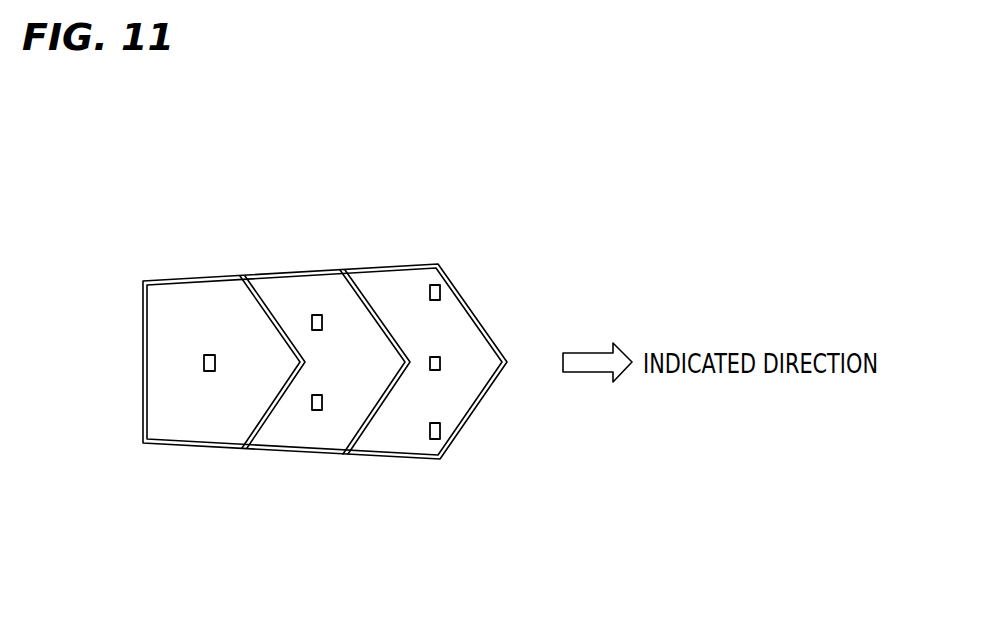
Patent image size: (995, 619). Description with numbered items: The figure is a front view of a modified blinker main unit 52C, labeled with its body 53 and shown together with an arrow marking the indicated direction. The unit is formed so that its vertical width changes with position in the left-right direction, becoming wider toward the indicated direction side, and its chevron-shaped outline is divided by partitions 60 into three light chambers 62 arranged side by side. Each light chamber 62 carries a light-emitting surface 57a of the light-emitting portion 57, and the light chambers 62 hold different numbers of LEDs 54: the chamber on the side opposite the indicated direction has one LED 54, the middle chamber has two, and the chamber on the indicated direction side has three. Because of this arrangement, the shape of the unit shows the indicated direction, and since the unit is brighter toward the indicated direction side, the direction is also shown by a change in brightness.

The indicator body 53 is at (400, 361).
The blinker main unit 52C is at (496, 324).
The light emitting portion 57 is at (305, 211).
The light-emitting surface 57a is at (187, 300).
The partition wall 60 is at (252, 445).
The light chamber 62 is at (240, 339).
The LED 54 is at (203, 363).